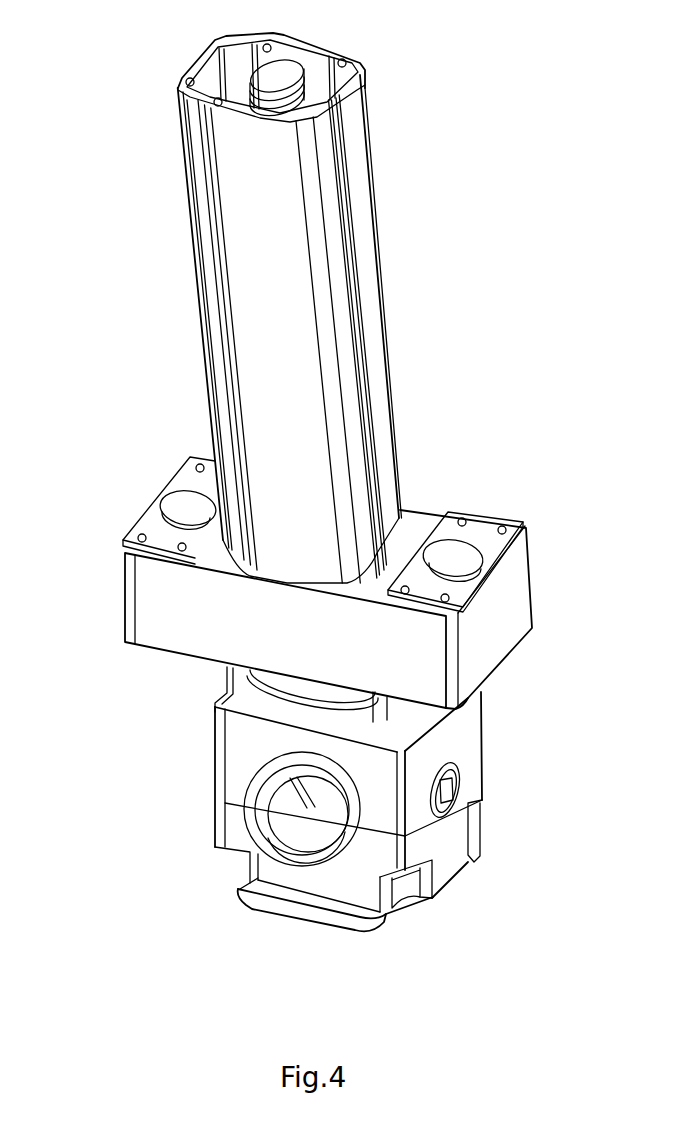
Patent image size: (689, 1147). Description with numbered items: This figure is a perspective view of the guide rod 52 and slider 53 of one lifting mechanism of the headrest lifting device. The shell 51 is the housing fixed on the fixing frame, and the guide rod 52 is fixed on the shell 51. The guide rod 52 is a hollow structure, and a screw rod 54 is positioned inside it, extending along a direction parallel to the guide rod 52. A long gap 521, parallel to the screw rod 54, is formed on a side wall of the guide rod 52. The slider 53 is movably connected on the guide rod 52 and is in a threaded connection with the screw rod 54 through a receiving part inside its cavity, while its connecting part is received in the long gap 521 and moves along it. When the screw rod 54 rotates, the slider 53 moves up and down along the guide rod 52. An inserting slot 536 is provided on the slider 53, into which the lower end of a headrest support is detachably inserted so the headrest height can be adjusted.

The shell 51 is at (232, 823).
The guide rod 52 is at (235, 228).
The long gap 521 is at (353, 268).
The slider 53 is at (152, 608).
The inserting slot 536 is at (465, 552).
The screw rod 54 is at (278, 72).